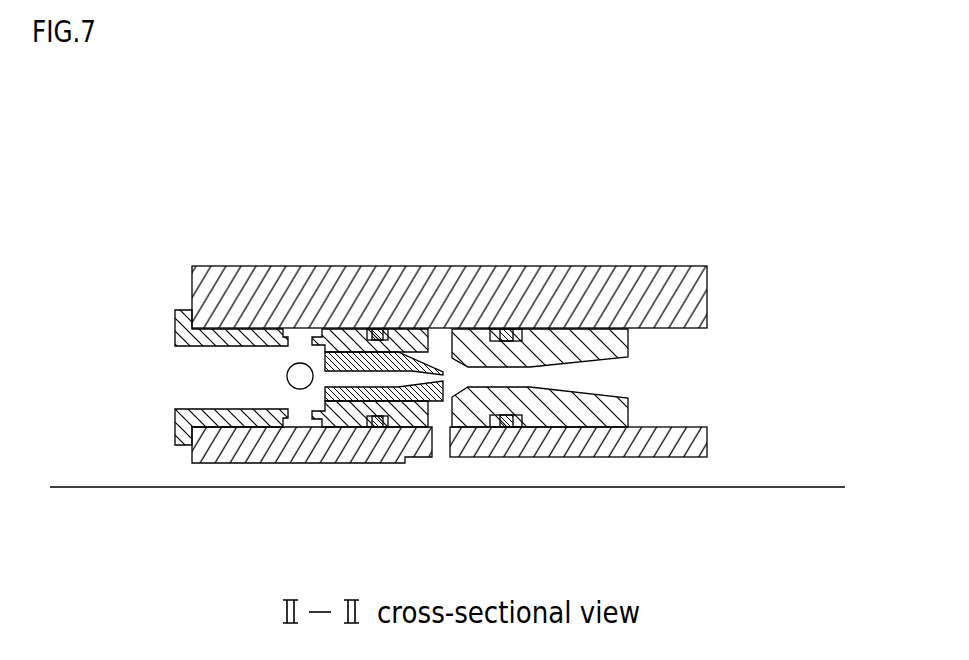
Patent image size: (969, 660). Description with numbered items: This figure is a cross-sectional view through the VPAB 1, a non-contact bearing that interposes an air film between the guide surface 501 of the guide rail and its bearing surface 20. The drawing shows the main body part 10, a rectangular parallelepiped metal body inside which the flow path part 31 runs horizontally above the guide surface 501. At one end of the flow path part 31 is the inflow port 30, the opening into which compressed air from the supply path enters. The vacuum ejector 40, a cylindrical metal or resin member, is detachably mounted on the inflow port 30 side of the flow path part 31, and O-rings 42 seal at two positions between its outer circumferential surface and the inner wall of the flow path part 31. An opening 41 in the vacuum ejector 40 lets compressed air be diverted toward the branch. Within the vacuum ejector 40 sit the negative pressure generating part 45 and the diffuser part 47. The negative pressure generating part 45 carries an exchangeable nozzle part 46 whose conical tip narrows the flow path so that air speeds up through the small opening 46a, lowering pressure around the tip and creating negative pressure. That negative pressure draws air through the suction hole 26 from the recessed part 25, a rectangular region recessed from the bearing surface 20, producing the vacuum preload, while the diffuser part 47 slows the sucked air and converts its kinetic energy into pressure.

The VPAB 1 is at (426, 159).
The main body part 10 is at (605, 280).
The bearing surface 20 is at (271, 464).
The recessed part 25 is at (516, 440).
The suction hole 26 is at (440, 402).
The inflow port 30 is at (177, 375).
The flow path part 31 is at (658, 360).
The vacuum ejector 40 is at (175, 318).
The opening 41 is at (298, 362).
The O-ring 42 is at (374, 329).
The negative pressure generating part 45 is at (450, 341).
The nozzle part 46 is at (346, 420).
The opening 46a is at (435, 364).
The diffuser part 47 is at (545, 390).
The guide surface 501 is at (810, 485).